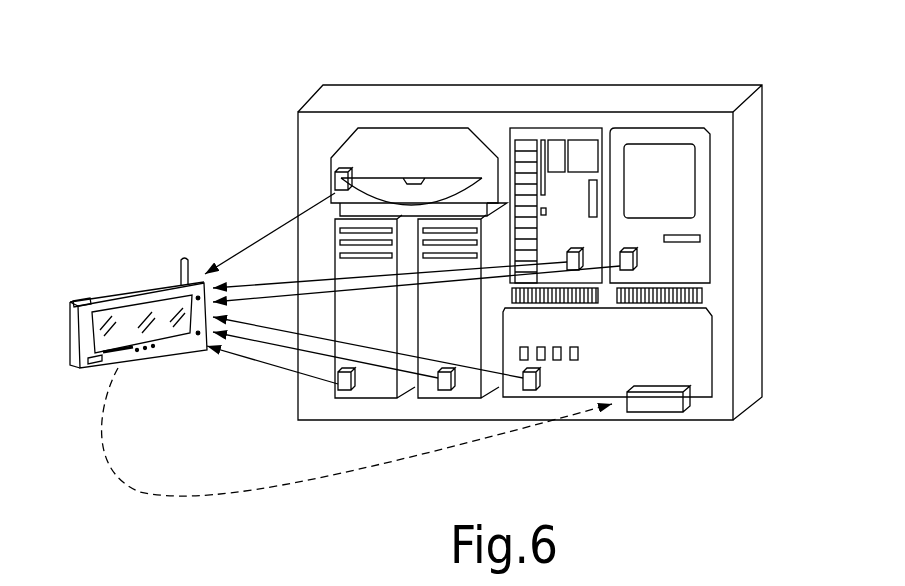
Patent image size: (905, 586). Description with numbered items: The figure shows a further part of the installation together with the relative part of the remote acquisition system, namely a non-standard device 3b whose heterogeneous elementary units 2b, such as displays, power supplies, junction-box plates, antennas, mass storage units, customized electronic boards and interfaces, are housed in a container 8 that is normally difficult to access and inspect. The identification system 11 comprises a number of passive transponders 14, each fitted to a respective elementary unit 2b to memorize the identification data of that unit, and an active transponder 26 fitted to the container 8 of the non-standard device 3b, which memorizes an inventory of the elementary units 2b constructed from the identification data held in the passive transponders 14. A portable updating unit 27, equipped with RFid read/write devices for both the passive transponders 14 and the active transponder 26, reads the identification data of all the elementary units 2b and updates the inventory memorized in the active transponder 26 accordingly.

The elementary unit 2b is at (387, 132).
The non-standard device 3b is at (258, 154).
The container 8 is at (748, 123).
The identification system 11 is at (168, 232).
The passive transponder 14 is at (335, 185).
The active transponder 26 is at (657, 402).
The updating unit 27 is at (135, 322).